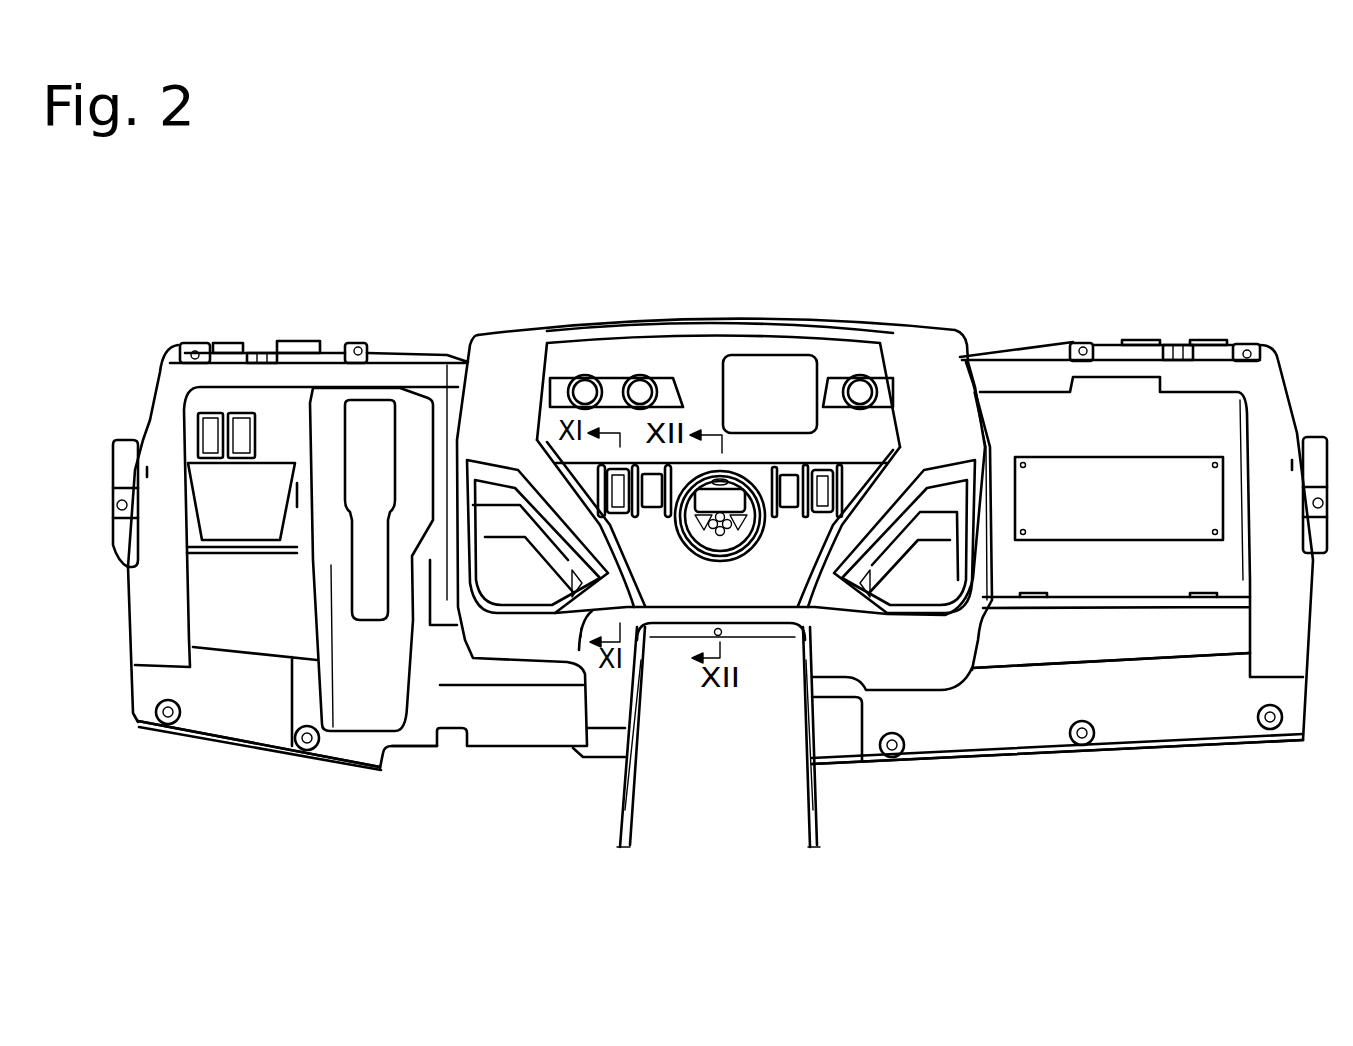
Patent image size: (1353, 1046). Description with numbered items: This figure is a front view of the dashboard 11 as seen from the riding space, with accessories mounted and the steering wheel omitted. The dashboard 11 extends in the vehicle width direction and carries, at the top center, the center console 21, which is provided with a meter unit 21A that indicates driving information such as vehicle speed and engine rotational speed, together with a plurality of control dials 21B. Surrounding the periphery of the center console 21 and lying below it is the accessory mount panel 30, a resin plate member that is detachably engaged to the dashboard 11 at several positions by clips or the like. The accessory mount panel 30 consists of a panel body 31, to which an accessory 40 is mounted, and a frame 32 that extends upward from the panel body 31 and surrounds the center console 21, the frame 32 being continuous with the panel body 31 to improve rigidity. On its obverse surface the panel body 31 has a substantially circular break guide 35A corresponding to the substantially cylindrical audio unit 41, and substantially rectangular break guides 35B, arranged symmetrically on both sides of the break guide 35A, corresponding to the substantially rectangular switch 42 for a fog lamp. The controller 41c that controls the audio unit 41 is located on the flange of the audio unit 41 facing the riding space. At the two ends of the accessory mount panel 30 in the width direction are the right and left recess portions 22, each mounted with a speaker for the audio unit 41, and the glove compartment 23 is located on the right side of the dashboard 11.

The dashboard 11 is at (1110, 340).
The center console 21 is at (577, 357).
The meter unit 21A is at (750, 365).
The control dials 21B is at (643, 373).
The recess portions 22 is at (520, 572).
The glove compartment 23 is at (1187, 430).
The accessory mount panel 30 is at (917, 323).
The panel body 31 is at (797, 552).
The frame 32 is at (953, 330).
The break guide 35A is at (735, 460).
The break guides 35B is at (790, 473).
The accessory 40 is at (727, 639).
The audio unit 41 is at (734, 617).
The controller 41c is at (743, 528).
The switch 42 is at (602, 507).